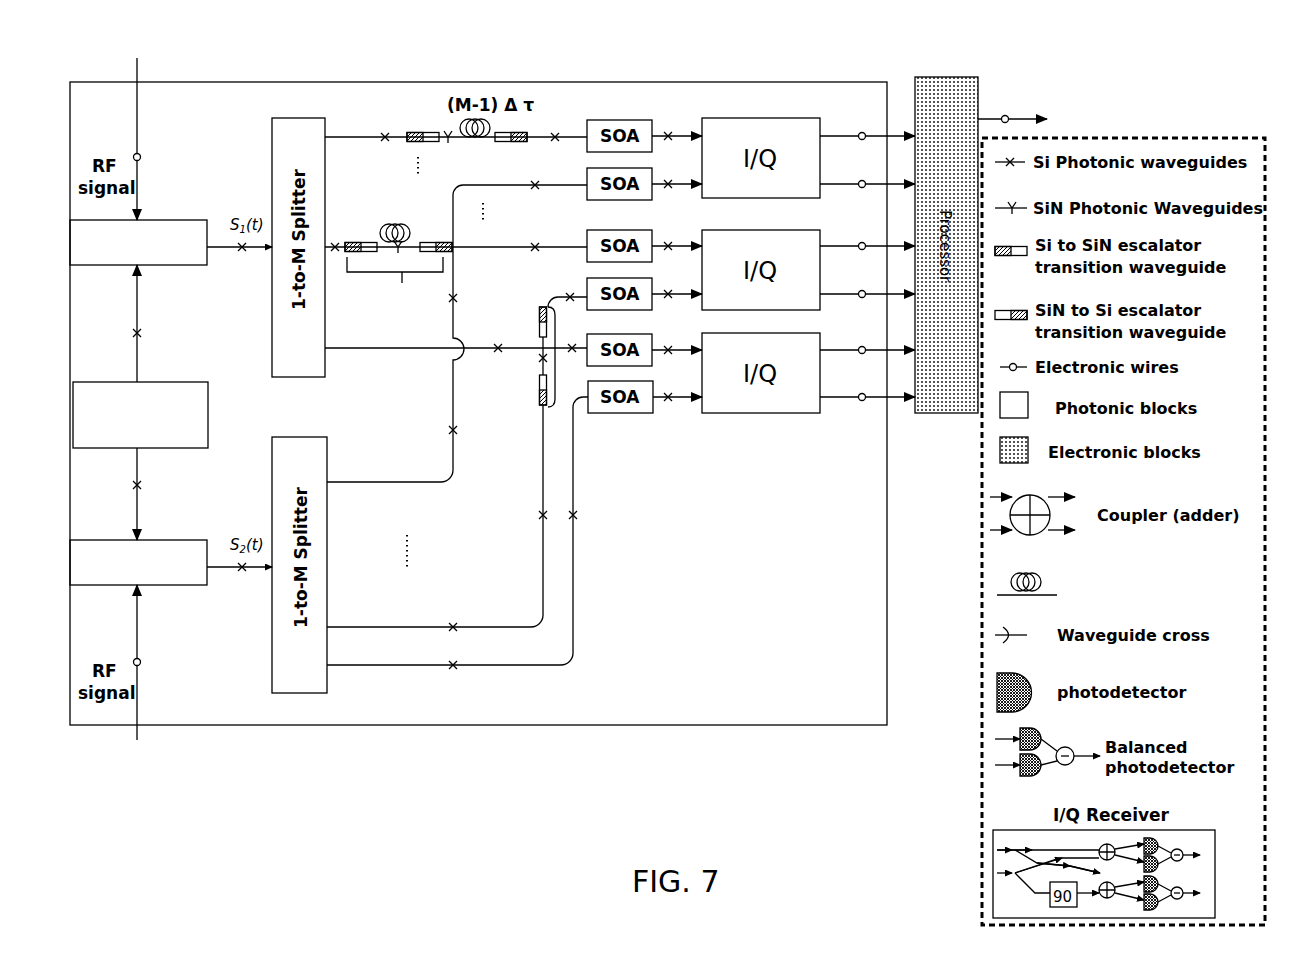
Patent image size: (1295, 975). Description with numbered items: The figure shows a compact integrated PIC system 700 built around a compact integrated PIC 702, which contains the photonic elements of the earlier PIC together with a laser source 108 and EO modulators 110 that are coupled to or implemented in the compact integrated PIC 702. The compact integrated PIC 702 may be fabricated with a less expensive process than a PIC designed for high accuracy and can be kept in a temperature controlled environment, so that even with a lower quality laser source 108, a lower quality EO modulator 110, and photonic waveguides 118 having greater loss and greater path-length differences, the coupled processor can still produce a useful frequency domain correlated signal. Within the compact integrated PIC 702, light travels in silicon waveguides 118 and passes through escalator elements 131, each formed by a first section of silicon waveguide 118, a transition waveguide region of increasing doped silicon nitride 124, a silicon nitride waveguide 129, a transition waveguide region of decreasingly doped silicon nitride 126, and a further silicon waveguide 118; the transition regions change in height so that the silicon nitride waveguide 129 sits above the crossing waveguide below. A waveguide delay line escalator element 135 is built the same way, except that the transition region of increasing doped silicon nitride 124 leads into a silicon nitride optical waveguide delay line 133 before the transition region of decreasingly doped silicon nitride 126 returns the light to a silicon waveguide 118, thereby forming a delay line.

The compact integrated PIC system 700 is at (218, 44).
The compact integrated PIC 702 is at (318, 82).
The laser source 108 is at (180, 449).
The EO modulator 110 is at (180, 266).
The silicon waveguide 118 is at (340, 252).
The transition waveguide region of increasing doped silicon nitride 124 is at (362, 242).
The transition waveguide region of decreasingly doped silicon nitride 126 is at (455, 242).
The silicon nitride waveguide 129 is at (540, 372).
The escalator element 131 is at (549, 360).
The silicon nitride optical waveguide delay line 133 is at (386, 223).
The waveguide delay line escalator element 135 is at (395, 284).